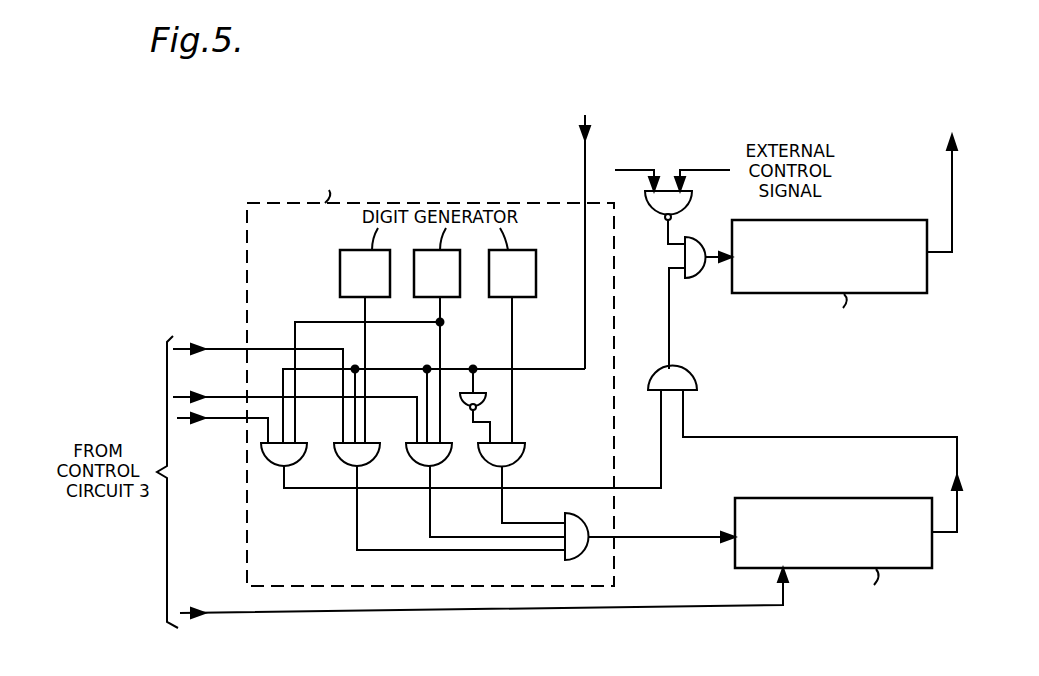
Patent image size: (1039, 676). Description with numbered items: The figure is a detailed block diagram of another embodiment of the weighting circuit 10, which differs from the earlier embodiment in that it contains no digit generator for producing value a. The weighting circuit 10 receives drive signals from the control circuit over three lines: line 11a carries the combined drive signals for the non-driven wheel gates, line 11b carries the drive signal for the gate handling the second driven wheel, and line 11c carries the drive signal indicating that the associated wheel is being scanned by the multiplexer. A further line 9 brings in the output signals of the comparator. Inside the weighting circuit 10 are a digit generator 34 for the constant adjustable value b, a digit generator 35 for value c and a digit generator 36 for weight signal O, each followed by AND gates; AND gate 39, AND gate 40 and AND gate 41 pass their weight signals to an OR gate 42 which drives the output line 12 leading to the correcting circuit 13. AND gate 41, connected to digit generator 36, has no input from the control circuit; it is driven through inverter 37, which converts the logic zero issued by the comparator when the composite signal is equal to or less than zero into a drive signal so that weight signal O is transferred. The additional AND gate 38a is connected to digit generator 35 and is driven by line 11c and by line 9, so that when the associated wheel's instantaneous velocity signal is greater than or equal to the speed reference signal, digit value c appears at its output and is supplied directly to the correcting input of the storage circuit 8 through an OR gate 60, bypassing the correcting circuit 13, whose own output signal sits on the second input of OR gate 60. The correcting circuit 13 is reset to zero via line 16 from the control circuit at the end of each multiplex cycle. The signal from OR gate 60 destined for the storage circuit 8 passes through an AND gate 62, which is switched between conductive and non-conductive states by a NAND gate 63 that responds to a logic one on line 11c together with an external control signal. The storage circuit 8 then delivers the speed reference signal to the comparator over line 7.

The output line 7 is at (952, 197).
The storage circuit 8 is at (831, 267).
The line 9 is at (583, 177).
The weighting circuit 10 is at (296, 571).
The line 11a is at (184, 349).
The line 11b is at (184, 397).
The line 11c is at (181, 419).
The output line 12 is at (684, 535).
The correcting circuit 13 is at (840, 546).
The line 16 is at (688, 607).
The digit generator 34 is at (340, 258).
The digit generator 35 is at (460, 296).
The digit generator 36 is at (536, 296).
The inverter 37 is at (487, 400).
The AND gate 38a is at (262, 462).
The AND gate 39 is at (340, 460).
The AND gate 40 is at (408, 460).
The AND gate 41 is at (482, 460).
The OR gate 42 is at (590, 548).
The OR gate 60 is at (699, 378).
The AND gate 62 is at (699, 279).
The NAND gate 63 is at (680, 206).